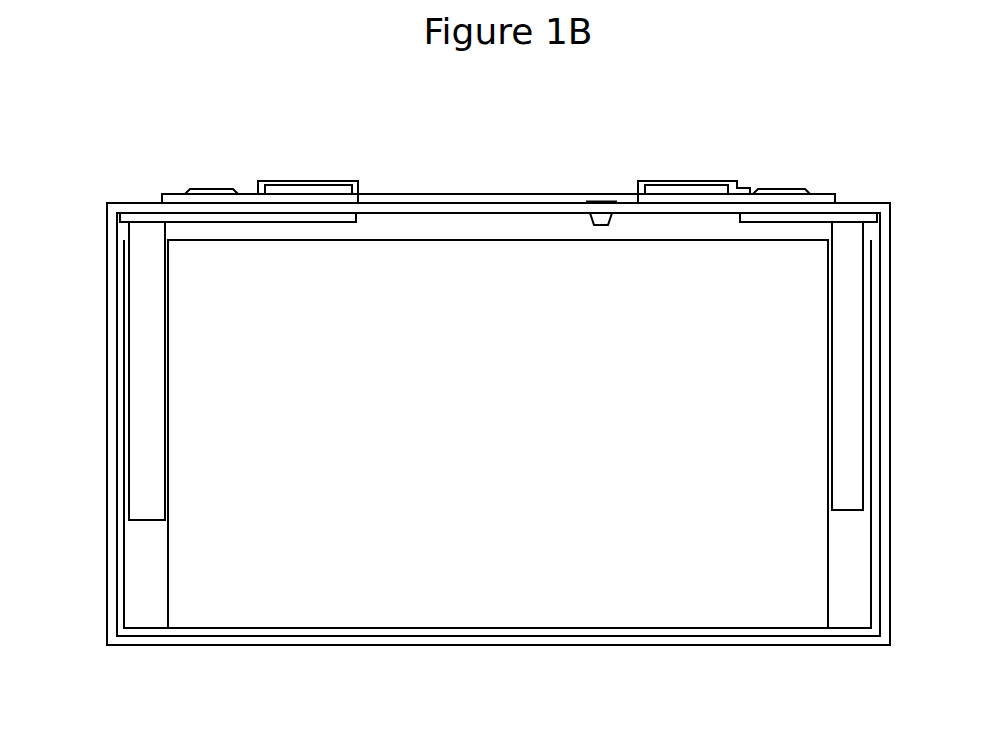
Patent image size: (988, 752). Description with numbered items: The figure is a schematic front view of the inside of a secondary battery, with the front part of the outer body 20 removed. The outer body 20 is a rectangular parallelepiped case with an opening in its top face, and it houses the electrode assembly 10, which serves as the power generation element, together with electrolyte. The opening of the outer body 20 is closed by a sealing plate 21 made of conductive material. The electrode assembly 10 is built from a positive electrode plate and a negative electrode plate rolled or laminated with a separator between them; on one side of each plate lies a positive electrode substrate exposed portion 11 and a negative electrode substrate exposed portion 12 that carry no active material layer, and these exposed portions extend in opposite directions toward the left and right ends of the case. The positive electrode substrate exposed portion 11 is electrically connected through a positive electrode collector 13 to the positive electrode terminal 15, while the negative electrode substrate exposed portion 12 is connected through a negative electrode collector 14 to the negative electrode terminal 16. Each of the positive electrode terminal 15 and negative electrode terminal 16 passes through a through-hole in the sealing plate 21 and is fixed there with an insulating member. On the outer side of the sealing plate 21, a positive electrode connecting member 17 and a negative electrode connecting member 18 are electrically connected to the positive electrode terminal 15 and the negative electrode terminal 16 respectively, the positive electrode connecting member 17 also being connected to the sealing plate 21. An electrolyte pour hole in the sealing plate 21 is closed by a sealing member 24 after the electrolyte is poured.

The electrode assembly 10 is at (565, 555).
The positive electrode substrate exposed portion 11 is at (850, 573).
The negative electrode substrate exposed portion 12 is at (145, 568).
The positive electrode collector 13 is at (850, 353).
The negative electrode collector 14 is at (145, 380).
The positive electrode terminal 15 is at (782, 188).
The negative electrode terminal 16 is at (213, 188).
The positive electrode connecting member 17 is at (687, 181).
The negative electrode connecting member 18 is at (307, 184).
The outer body 20 is at (892, 274).
The sealing plate 21 is at (480, 200).
The sealing member 24 is at (602, 200).